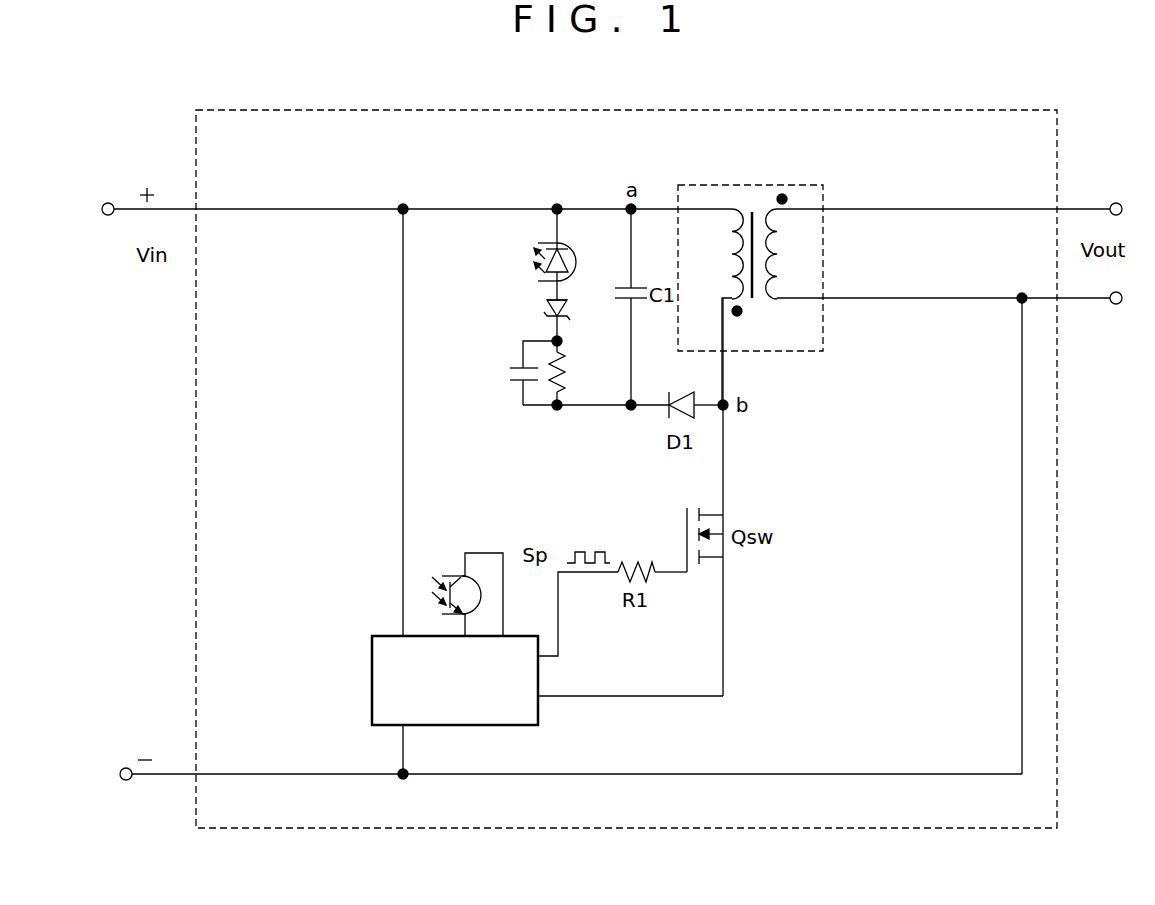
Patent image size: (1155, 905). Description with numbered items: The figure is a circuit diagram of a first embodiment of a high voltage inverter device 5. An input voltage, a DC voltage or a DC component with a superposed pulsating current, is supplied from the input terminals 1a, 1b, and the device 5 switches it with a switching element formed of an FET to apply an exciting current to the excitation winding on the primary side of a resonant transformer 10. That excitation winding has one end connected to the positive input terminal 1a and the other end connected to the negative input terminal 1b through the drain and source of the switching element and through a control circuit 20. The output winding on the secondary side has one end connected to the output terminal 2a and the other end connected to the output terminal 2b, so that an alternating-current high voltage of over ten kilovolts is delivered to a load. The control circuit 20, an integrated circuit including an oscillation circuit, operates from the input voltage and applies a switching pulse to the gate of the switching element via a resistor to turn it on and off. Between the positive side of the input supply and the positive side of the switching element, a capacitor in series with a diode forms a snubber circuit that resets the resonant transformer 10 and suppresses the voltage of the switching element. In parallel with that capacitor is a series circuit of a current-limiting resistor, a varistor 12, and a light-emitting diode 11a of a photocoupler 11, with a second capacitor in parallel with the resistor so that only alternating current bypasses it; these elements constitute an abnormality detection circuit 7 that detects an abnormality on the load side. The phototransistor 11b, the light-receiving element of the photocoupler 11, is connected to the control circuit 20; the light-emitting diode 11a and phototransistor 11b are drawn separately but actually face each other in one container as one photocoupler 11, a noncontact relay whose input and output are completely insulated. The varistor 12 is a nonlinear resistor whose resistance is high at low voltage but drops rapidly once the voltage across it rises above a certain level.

The input terminal 1a is at (108, 203).
The input terminal 1b is at (126, 781).
The output terminal 2a is at (1116, 203).
The output terminal 2b is at (1116, 304).
The high voltage inverter device 5 is at (1057, 486).
The abnormality detection circuit 7 is at (533, 382).
The resonant transformer 10 is at (757, 185).
The photocoupler 11 is at (552, 247).
The light-emitting diode 11a is at (568, 259).
The phototransistor 11b is at (456, 576).
The varistor 12 is at (548, 309).
The control circuit 20 is at (372, 684).